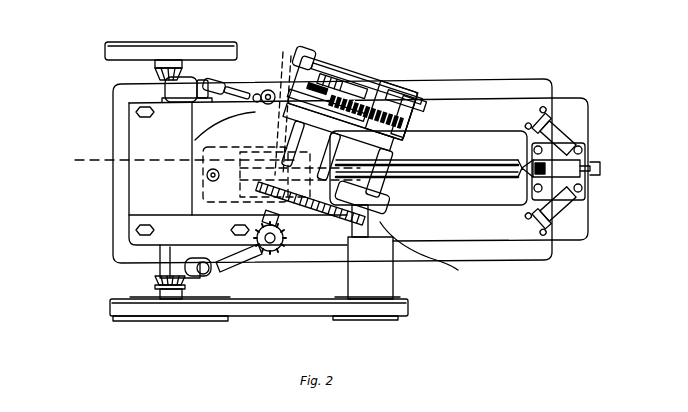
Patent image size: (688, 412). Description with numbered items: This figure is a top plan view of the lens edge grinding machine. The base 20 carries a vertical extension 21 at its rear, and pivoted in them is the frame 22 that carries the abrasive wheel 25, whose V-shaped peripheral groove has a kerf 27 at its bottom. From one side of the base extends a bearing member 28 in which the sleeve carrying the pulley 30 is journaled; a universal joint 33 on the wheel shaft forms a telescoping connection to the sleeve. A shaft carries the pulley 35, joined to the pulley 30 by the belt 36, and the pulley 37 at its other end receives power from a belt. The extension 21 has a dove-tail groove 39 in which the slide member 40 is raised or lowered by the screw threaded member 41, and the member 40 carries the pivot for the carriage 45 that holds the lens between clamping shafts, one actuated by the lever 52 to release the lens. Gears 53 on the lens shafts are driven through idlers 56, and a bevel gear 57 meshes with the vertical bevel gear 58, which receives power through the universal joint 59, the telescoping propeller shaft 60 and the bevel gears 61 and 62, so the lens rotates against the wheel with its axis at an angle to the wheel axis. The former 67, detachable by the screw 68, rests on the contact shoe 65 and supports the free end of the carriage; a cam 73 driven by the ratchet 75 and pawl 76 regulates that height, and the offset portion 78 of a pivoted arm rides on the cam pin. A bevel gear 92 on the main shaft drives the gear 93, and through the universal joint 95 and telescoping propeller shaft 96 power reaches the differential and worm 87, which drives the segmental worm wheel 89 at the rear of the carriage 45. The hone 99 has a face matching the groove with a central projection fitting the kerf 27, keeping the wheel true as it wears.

The base 20 is at (582, 98).
The vertical extension 21 is at (160, 186).
The frame 22 is at (520, 61).
The abrasive wheel 25 is at (470, 178).
The kerf 27 is at (488, 172).
The bearing member 28 is at (393, 282).
The pulley 30 is at (404, 320).
The second universal joint 33 is at (430, 251).
The pulley 35 is at (150, 321).
The belt 36 is at (262, 316).
The pulley 37 is at (172, 42).
The dove-tail groove 39 is at (226, 127).
The slide member 40 is at (283, 136).
The screw threaded member 41 is at (285, 106).
The carriage 45 is at (420, 130).
The lever 52 is at (380, 210).
The gears 53 is at (338, 284).
The idlers 56 is at (318, 255).
The bevel gear 57 is at (290, 236).
The bevel gear 58 is at (275, 252).
The universal joint 59 is at (208, 268).
The telescoping propeller shaft 60 is at (222, 270).
The bevel gear 61 is at (158, 270).
The bevel gear 62 is at (158, 282).
The contact shoe 65 is at (378, 90).
The former 67 is at (415, 128).
The screw 68 is at (395, 98).
The cam 73 is at (312, 58).
The ratchet 75 is at (298, 58).
The pawl 76 is at (350, 92).
The offset portion 78 is at (330, 62).
The worm 87 is at (180, 138).
The segmental worm wheel 89 is at (283, 52).
The bevel gear 92 is at (155, 72).
The bevel gear 93 is at (170, 88).
The universal joint 95 is at (270, 89).
The telescoping propeller shaft 96 is at (232, 84).
The hone 99 is at (590, 160).